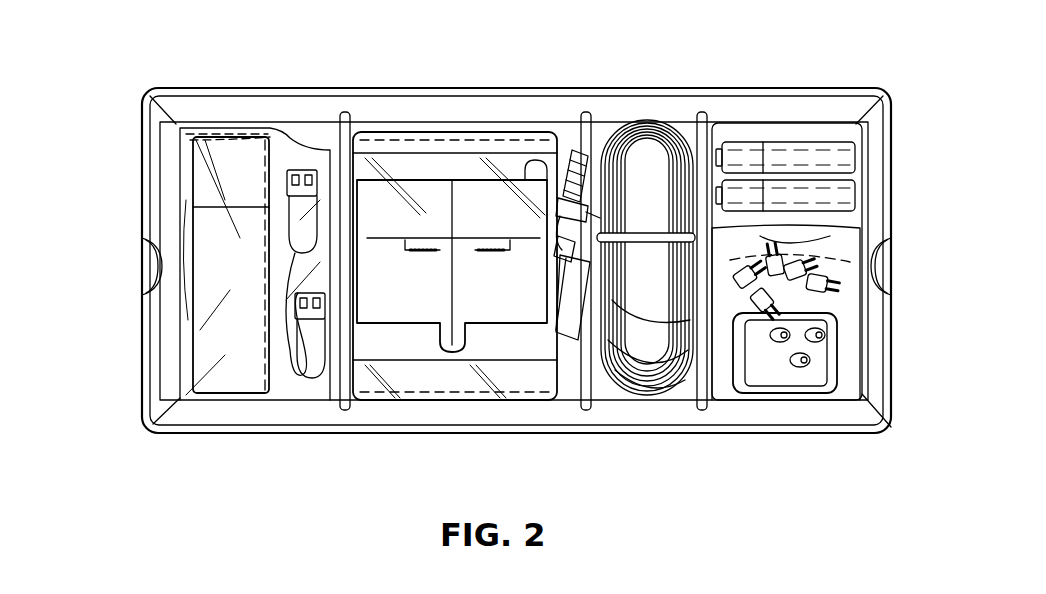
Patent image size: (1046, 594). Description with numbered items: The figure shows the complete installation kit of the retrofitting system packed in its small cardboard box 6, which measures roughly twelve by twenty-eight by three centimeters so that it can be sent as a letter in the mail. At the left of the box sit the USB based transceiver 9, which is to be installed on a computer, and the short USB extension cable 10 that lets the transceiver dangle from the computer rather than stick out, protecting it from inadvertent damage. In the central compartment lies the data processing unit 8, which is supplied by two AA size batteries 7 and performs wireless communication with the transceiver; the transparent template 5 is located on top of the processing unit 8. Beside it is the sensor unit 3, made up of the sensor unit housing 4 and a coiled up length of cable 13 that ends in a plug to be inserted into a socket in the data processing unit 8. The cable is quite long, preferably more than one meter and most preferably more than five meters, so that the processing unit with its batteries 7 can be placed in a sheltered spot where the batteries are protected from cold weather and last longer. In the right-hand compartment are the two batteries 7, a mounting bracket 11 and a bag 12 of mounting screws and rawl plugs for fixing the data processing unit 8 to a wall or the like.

The sensor unit 3 is at (623, 68).
The sensor unit housing 4 is at (558, 290).
The template 5 is at (403, 180).
The cardboard box 6 is at (142, 164).
The AA size batteries 7 is at (781, 150).
The data processing unit 8 is at (488, 152).
The USB based transceiver 9 is at (233, 162).
The USB extension cable 10 is at (328, 168).
The mounting bracket 11 is at (806, 373).
The bag of mounting screws and rawl plugs 12 is at (822, 282).
The coiled up length of cable 13 is at (686, 376).